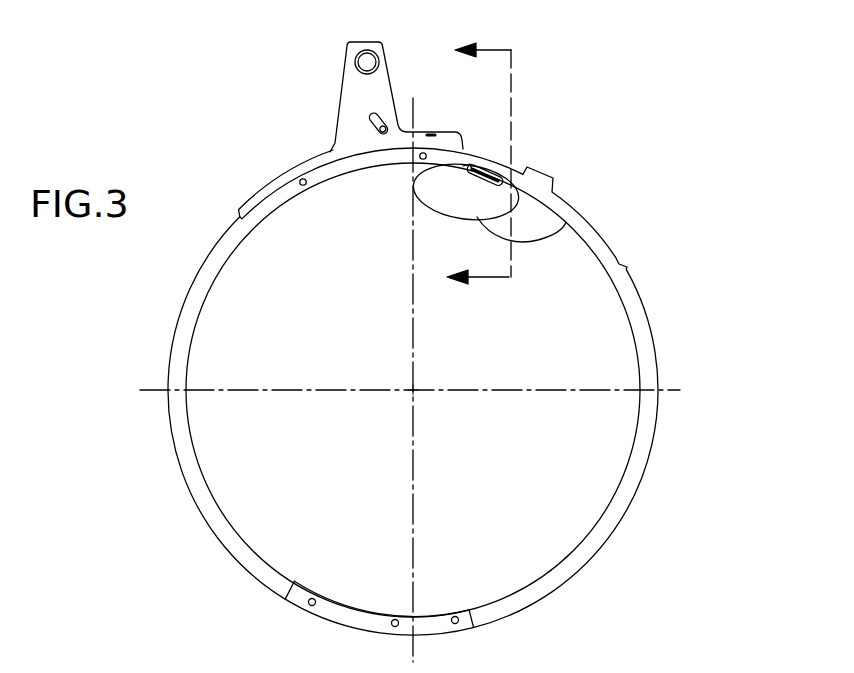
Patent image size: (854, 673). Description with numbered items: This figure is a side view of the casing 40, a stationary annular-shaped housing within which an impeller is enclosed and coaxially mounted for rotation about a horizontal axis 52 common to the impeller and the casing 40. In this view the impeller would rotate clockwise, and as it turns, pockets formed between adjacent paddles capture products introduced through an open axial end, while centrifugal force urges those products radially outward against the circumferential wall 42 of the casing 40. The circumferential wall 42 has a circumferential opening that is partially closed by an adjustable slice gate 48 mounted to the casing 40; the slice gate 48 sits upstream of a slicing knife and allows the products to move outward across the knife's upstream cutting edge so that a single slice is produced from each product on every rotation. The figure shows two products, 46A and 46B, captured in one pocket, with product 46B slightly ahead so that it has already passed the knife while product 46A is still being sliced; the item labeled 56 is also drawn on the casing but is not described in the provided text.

The casing 40 is at (681, 184).
The circumferential wall 42 is at (648, 375).
The product 46A is at (448, 198).
The product 46B is at (533, 235).
The adjustable slice gate 48 is at (302, 167).
The horizontal axis 52 is at (411, 387).
The bottom pad 56 is at (572, 550).